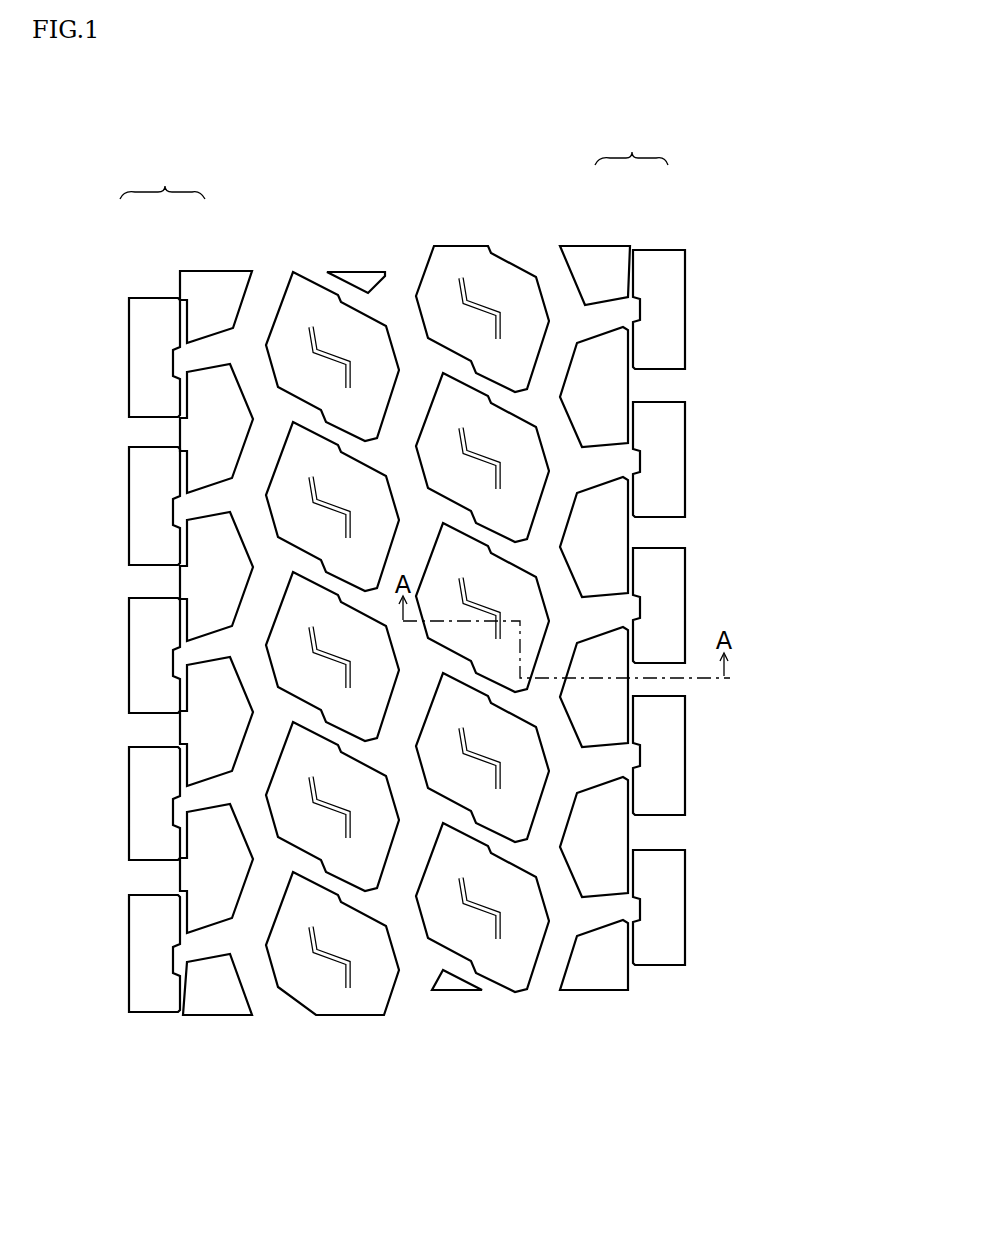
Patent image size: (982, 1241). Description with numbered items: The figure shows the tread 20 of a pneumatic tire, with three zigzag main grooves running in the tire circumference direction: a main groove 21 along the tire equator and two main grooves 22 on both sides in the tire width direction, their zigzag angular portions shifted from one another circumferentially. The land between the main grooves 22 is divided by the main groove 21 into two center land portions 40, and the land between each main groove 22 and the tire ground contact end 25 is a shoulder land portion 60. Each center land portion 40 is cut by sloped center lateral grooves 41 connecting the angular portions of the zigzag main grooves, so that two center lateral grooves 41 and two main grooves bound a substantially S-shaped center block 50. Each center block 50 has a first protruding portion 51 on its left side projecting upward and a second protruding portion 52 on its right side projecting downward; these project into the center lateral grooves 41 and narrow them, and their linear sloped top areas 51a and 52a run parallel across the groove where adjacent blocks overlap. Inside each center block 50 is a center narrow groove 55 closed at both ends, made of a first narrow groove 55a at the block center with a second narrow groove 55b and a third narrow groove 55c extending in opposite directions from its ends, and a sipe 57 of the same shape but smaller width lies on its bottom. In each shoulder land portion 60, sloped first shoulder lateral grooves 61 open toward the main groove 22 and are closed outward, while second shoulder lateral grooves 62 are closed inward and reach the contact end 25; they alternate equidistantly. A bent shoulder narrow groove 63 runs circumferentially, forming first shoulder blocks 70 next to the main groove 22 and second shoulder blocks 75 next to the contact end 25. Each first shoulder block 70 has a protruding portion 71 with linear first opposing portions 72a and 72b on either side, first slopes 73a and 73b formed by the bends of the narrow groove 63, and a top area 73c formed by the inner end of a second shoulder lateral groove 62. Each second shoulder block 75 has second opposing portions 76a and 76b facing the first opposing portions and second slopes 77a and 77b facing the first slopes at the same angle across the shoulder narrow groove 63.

The tread 20 is at (408, 118).
The main groove 21 is at (402, 307).
The main groove 22 is at (272, 307).
The tire ground contact end 25 is at (688, 268).
The center land portion 40 is at (323, 313).
The center lateral groove 41 is at (300, 410).
The center block 50 is at (290, 487).
The first protruding portion 51 is at (478, 387).
The top area of first protruding portion 51a is at (445, 372).
The second protruding portion 52 is at (497, 375).
The top area of second protruding portion 52a is at (445, 395).
The center narrow groove 55 is at (340, 512).
The first narrow groove 55a is at (333, 650).
The second narrow groove 55b is at (310, 630).
The third narrow groove 55c is at (345, 675).
The sipe 57 is at (335, 512).
The shoulder land portion 60 is at (394, 163).
The first shoulder lateral groove 61 is at (190, 507).
The second shoulder lateral groove 62 is at (145, 428).
The shoulder narrow groove 63 is at (183, 627).
The first shoulder block 70 is at (215, 307).
The protruding portion 71 is at (632, 383).
The first opposing portion 72a is at (632, 780).
The first opposing portion 72b is at (632, 895).
The first slope 73a is at (632, 800).
The first slope 73b is at (632, 855).
The top area of protruding portion 73c is at (632, 820).
The second shoulder block 75 is at (153, 317).
The second opposing portion 76a is at (182, 830).
The second opposing portion 76b is at (183, 767).
The second slope 77a is at (185, 887).
The second slope 77b is at (180, 753).